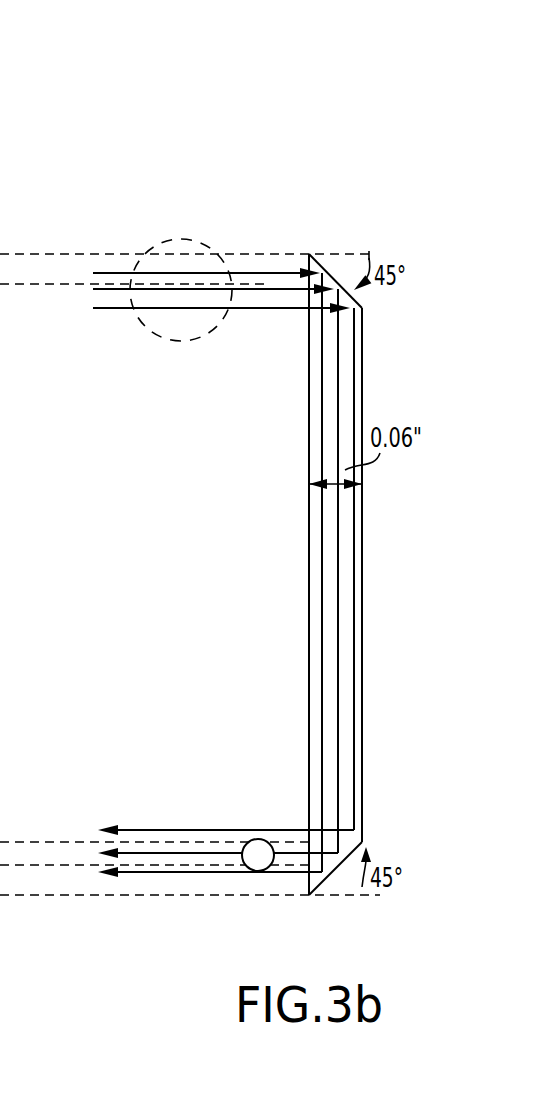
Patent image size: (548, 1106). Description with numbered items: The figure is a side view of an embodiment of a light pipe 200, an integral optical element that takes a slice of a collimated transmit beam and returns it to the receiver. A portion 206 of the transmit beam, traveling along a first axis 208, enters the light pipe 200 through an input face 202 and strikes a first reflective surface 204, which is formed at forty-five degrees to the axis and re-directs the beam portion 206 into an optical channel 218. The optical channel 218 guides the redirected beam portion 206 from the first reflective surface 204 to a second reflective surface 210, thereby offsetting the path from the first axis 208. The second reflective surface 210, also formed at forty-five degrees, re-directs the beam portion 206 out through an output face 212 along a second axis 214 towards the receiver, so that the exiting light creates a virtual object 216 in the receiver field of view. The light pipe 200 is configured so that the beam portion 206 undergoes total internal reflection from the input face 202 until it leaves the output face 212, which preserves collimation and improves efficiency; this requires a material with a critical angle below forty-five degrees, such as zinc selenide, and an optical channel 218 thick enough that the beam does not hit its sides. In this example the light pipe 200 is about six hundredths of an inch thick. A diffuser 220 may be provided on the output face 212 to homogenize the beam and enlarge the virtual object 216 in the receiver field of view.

The light pipe 200 is at (437, 133).
The input face 202 is at (282, 288).
The first reflective surface 204 is at (352, 292).
The beam portion 206 is at (163, 245).
The first axis 208 is at (28, 287).
The second reflective surface 210 is at (338, 868).
The output face 212 is at (308, 880).
The second axis 214 is at (42, 865).
The virtual object 216 is at (258, 839).
The optical channel 218 is at (353, 583).
The diffuser 220 is at (324, 842).